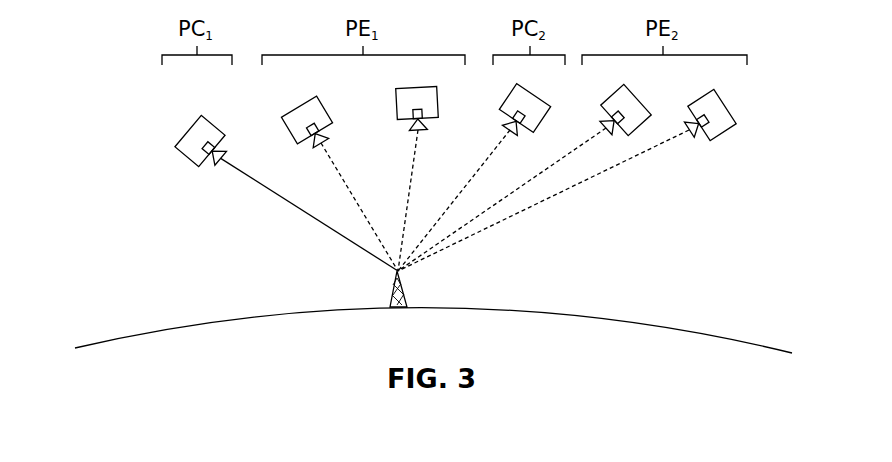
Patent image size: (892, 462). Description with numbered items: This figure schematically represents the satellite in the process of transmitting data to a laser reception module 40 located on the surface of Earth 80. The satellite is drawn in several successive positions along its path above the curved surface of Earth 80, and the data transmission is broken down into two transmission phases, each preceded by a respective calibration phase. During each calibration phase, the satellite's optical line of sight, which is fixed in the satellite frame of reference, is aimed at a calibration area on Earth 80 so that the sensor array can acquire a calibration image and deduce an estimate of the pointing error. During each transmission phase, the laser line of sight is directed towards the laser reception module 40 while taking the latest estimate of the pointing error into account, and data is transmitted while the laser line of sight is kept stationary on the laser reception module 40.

The laser reception module 40 is at (402, 275).
The Earth 80 is at (113, 332).